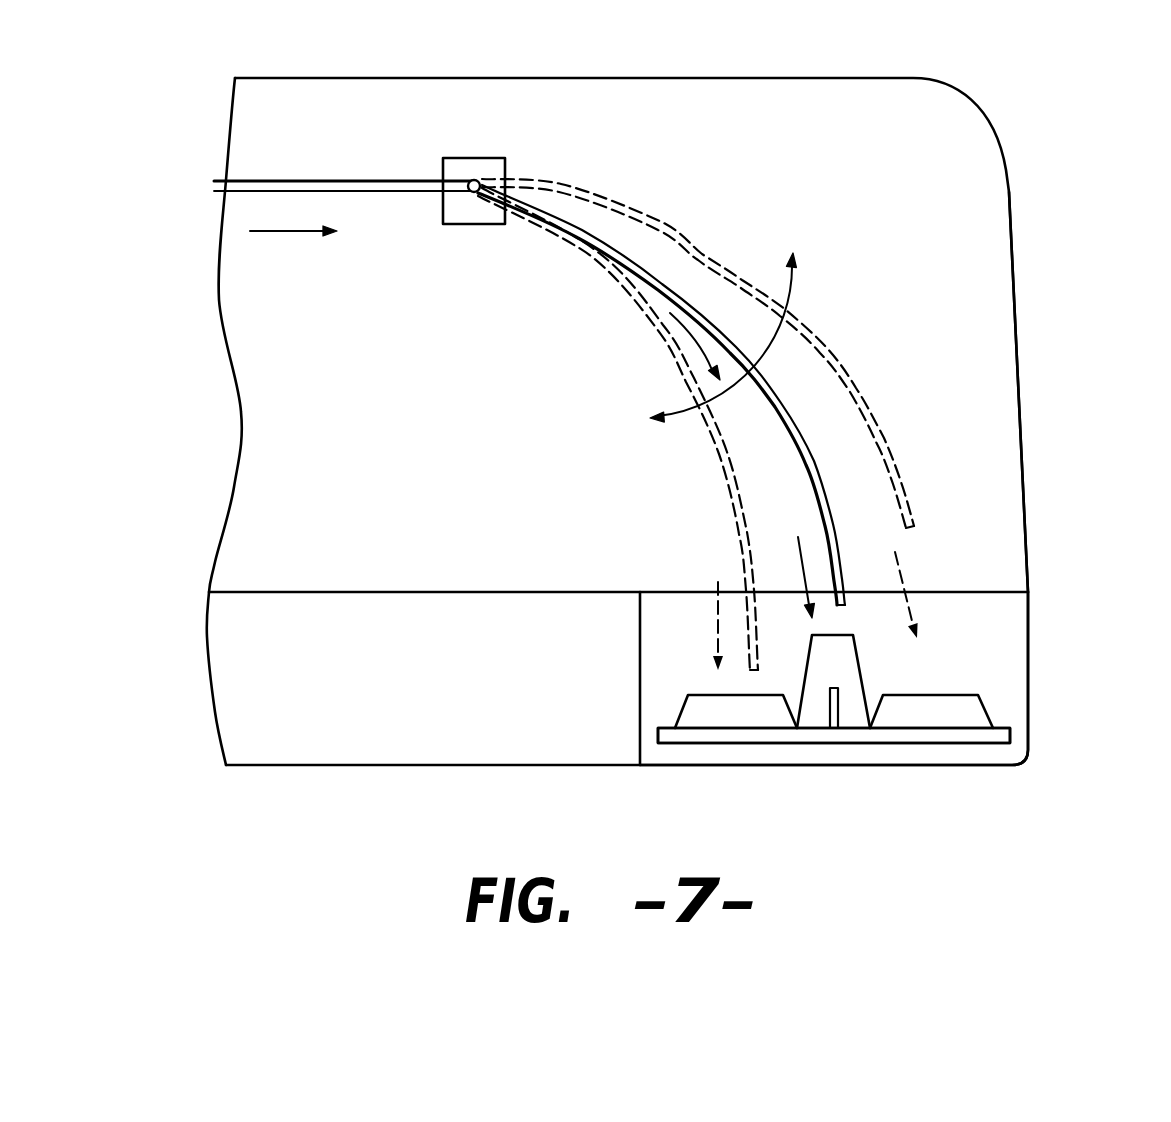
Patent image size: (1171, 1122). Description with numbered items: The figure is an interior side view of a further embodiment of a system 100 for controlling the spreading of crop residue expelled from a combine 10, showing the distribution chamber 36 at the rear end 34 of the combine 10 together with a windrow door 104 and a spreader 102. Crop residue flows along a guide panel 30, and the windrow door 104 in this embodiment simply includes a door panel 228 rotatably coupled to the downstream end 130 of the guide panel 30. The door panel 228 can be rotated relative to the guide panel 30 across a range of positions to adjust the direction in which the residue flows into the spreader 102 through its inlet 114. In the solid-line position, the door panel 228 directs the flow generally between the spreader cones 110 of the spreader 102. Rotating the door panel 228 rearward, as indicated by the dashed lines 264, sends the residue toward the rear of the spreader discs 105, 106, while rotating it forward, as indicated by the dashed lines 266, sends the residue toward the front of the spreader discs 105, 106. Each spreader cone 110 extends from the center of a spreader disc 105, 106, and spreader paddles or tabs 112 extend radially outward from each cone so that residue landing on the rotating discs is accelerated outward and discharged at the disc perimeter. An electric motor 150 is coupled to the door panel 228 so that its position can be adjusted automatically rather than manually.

The combine 10 is at (1066, 144).
The guide panel 30 is at (335, 165).
The rear end 34 is at (1018, 333).
The distribution chamber 36 is at (432, 450).
The system 100 is at (862, 276).
The spreader 102 is at (1044, 660).
The windrow door 104 is at (891, 394).
The first spreader disc 105 is at (957, 743).
The second spreader disc 106 is at (834, 735).
The spreader cone 110 is at (838, 658).
The spreader paddles or tabs 112 is at (732, 710).
The inlet 114 is at (692, 590).
The downstream end 130 is at (458, 178).
The electric motor 150 is at (477, 225).
The door panel 228 is at (765, 426).
The dashed lines 264 is at (900, 477).
The dashed lines 266 is at (730, 493).